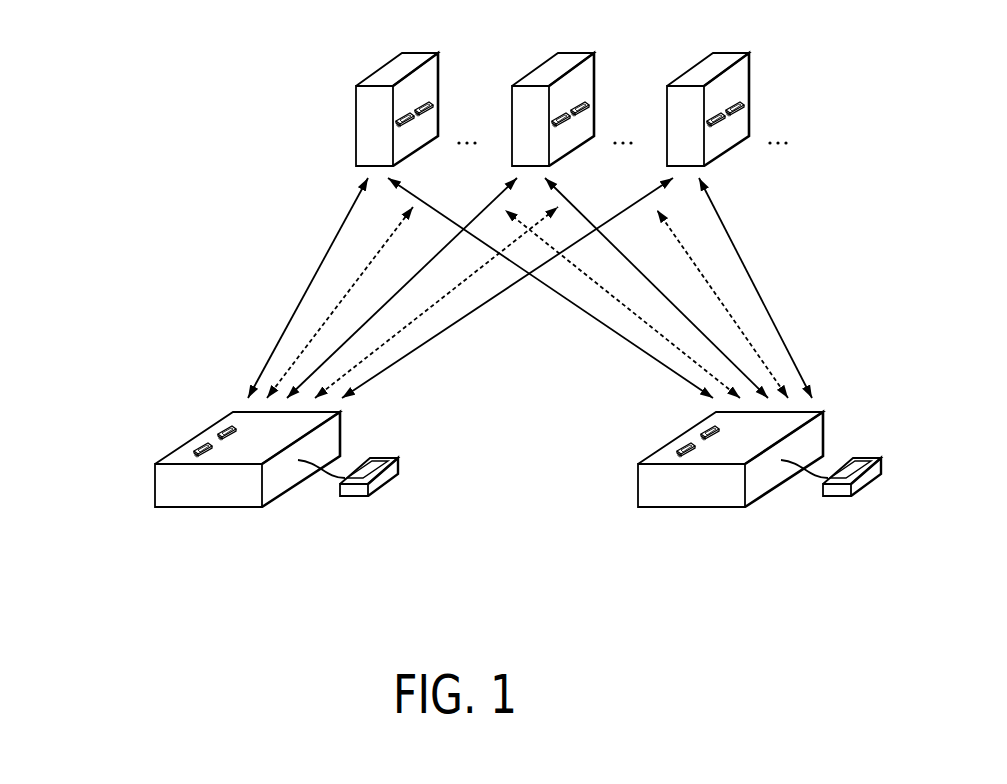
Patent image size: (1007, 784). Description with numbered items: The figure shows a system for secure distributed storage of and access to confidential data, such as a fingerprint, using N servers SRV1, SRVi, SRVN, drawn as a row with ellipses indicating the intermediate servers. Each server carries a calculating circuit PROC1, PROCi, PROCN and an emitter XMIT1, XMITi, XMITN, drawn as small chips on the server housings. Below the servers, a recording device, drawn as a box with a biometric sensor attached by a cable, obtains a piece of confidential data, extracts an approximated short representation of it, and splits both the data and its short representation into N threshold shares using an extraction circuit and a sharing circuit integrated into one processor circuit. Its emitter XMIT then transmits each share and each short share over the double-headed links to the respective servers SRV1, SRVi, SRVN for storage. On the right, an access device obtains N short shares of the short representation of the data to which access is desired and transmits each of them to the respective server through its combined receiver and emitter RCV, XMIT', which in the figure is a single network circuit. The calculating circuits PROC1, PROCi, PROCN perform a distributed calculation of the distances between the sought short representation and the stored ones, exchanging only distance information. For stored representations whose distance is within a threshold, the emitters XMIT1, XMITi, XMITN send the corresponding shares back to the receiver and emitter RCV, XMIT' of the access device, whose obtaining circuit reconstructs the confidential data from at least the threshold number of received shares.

The server SRV1 is at (390, 52).
The server SRVi is at (547, 52).
The server SRVN is at (702, 52).
The emitter XMIT1 is at (429, 98).
The emitter XMITi is at (585, 98).
The emitter XMITN is at (740, 98).
The calculating circuit PROC1 is at (421, 128).
The calculating circuit PROCi is at (577, 128).
The calculating circuit PROCN is at (732, 128).
The emitter XMIT is at (227, 423).
The receiver and transmitter of authentication station RCV, XMIT' is at (648, 411).